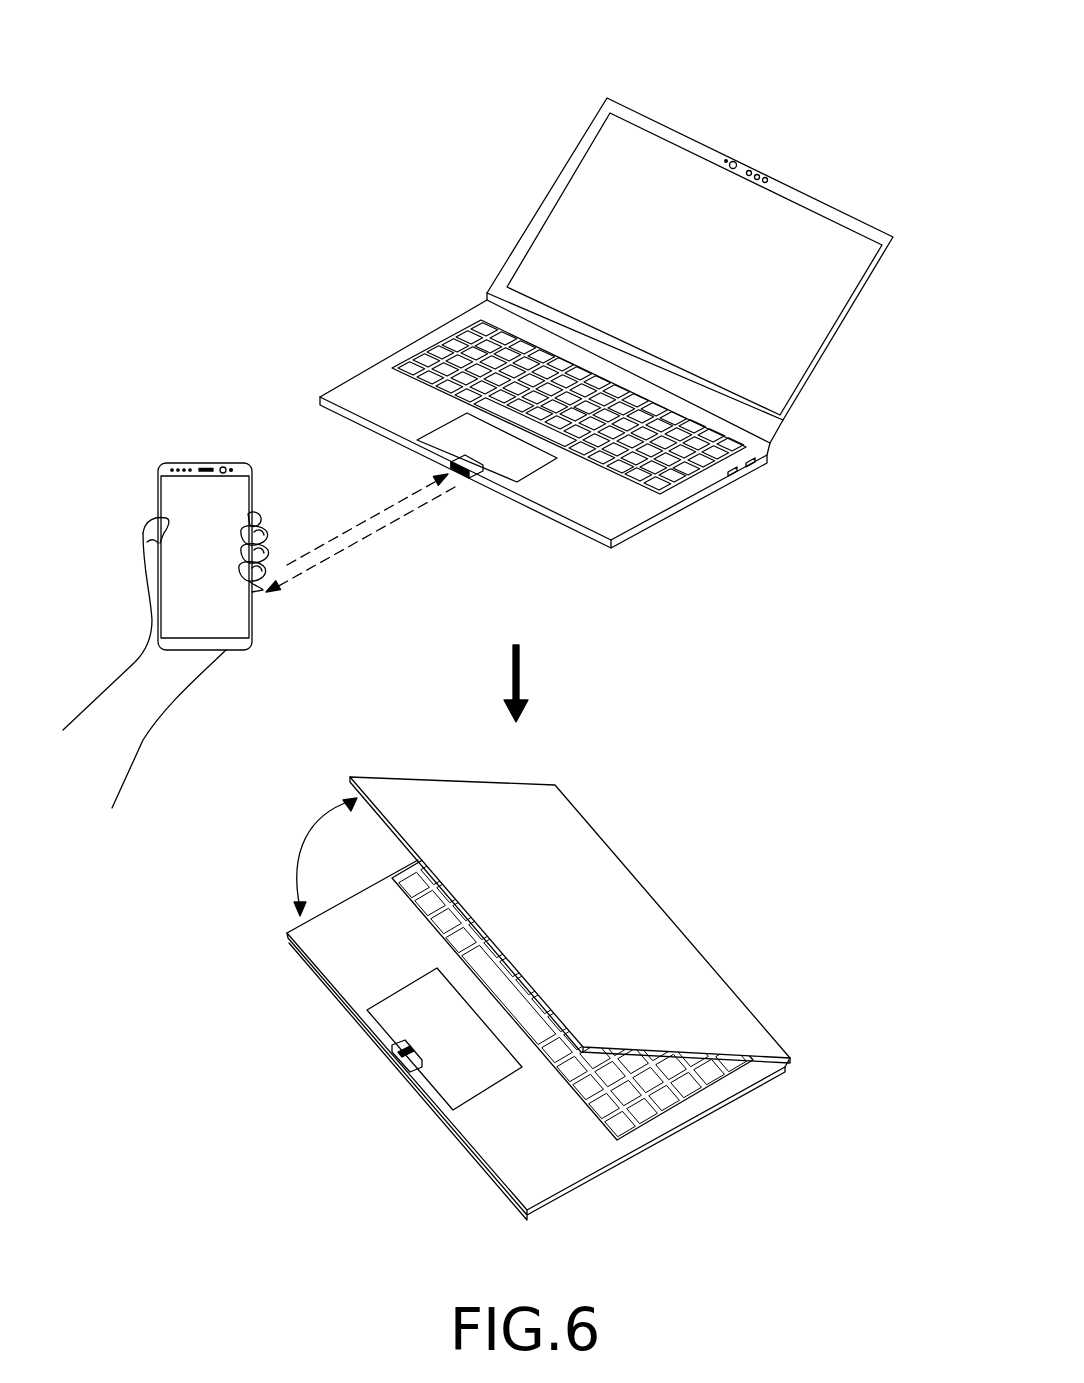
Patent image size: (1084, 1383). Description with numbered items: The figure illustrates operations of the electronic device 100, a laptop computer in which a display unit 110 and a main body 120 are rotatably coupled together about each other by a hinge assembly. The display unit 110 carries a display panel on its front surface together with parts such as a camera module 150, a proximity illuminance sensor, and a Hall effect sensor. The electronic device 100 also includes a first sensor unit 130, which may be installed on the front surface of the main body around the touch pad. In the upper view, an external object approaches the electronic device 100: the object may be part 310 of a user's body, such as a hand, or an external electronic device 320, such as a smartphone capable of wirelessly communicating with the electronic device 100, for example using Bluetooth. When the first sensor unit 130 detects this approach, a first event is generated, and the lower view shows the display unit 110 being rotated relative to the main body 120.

The electronic device 100 is at (574, 92).
The display unit 110 is at (838, 327).
The main body 120 is at (707, 478).
The first sensor unit 130 is at (468, 476).
The camera module 150 is at (737, 155).
The part of a user's body 310 is at (93, 697).
The external electronic device 320 is at (203, 462).